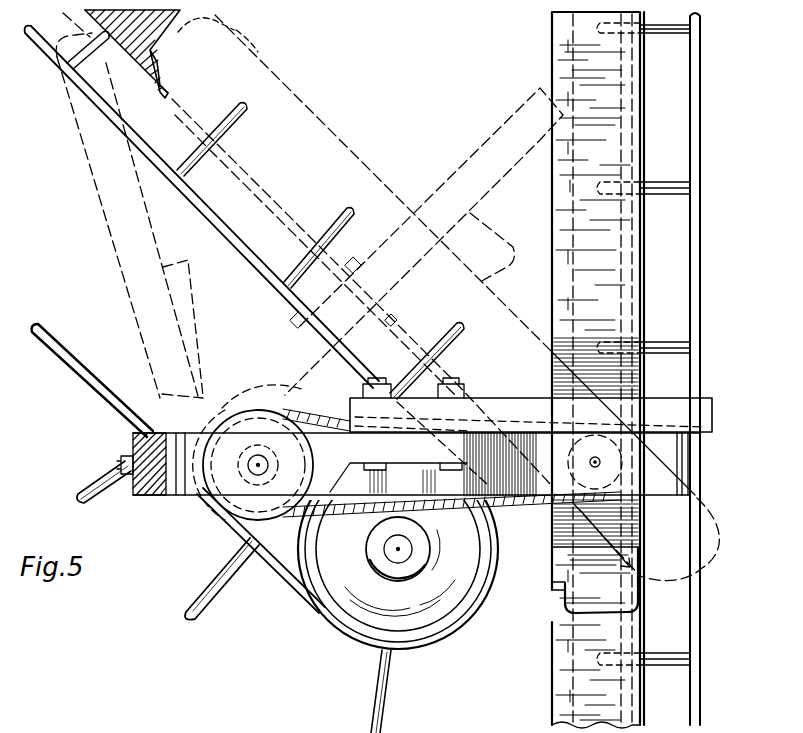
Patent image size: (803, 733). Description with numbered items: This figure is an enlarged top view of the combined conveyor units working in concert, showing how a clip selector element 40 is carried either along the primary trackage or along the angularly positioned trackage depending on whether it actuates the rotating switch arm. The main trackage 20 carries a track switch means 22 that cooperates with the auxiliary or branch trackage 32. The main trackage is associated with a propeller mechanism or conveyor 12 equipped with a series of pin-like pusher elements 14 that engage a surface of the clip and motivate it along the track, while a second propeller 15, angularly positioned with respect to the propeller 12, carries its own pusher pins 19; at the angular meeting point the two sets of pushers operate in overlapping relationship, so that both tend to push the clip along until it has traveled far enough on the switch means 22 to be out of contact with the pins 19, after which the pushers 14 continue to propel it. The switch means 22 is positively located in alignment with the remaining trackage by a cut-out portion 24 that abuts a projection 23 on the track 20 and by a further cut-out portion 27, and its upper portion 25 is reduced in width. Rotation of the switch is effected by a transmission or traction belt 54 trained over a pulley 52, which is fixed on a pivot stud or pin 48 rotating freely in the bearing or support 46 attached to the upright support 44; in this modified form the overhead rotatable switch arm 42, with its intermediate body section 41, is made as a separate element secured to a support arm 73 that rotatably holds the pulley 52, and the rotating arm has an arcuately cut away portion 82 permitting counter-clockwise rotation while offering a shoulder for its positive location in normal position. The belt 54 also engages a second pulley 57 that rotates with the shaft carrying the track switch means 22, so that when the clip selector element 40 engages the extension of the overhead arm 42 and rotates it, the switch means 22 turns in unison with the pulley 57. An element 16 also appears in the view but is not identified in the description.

The propeller mechanism 12 is at (706, 596).
The pusher elements 14 is at (662, 36).
The propeller 15 is at (96, 384).
The wheel 16 is at (348, 597).
The pusher pins 19 is at (322, 231).
The main trackage 20 is at (552, 700).
The track switch means 22 is at (366, 164).
The projection 23 is at (560, 604).
The cut-out portion 24 is at (560, 590).
The upper portion 25 is at (226, 22).
The cut-out portion 27 is at (256, 42).
The auxiliary branch trackage 32 is at (161, 42).
The clip selector element 40 is at (690, 455).
The intermediate section 41 is at (528, 392).
The rotatable switch arm 42 is at (100, 190).
The upright support 44 is at (130, 439).
The bearing 46 is at (186, 496).
The pivot stud 48 is at (118, 465).
The pulley 52 is at (228, 400).
The transmission belt 54 is at (298, 384).
The pulley 57 is at (595, 445).
The support arm 73 is at (190, 290).
The arcuately cut away portion 82 is at (190, 433).